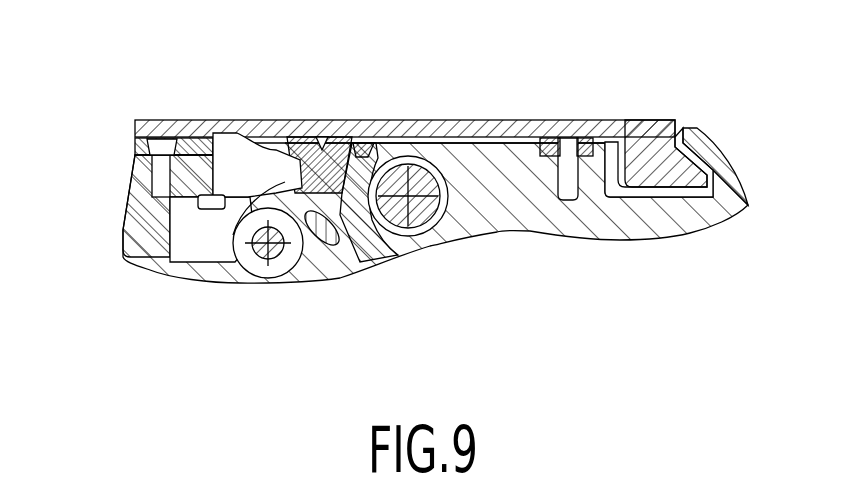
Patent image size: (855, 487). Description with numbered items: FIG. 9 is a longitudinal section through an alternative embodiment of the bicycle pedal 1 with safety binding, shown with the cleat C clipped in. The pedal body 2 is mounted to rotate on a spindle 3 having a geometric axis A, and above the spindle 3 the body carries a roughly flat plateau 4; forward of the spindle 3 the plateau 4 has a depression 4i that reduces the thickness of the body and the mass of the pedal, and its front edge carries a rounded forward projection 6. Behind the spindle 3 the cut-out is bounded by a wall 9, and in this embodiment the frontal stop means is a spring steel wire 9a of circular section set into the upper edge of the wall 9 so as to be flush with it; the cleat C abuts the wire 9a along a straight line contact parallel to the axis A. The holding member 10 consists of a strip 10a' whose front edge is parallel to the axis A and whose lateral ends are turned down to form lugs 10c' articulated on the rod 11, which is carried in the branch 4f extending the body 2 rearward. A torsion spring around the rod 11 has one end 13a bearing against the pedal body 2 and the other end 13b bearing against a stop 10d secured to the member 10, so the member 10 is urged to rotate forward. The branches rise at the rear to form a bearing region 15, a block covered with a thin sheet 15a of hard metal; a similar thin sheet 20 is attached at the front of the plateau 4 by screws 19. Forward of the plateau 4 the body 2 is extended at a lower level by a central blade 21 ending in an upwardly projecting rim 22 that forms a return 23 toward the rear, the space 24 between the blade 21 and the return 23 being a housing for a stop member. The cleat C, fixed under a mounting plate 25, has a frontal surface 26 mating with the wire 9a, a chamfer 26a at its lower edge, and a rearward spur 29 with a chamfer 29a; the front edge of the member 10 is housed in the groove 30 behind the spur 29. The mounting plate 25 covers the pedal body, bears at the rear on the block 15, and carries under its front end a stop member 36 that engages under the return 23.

The bicycle pedal 1 is at (532, 243).
The pedal body 2 is at (497, 203).
The spindle 3 is at (424, 225).
The plateau 4 is at (453, 120).
The branch 4f is at (232, 262).
The depression 4i is at (493, 120).
The rounded forward projection 6 is at (628, 120).
The wall 9 is at (352, 250).
The spring steel wire 9a is at (390, 120).
The holding member 10 is at (243, 140).
The strip 10a' is at (227, 67).
The lugs 10c' is at (146, 301).
The stop 10d is at (198, 203).
The rod 11 is at (258, 275).
The spring end 13a is at (308, 262).
The spring end 13b is at (195, 258).
The bearing region 15 is at (132, 168).
The thin sheet 15a is at (135, 150).
The screws 19 is at (585, 205).
The thin sheet 20 is at (558, 120).
The central blade 21 is at (643, 228).
The rim 22 is at (722, 212).
The return 23 is at (700, 128).
The space 24 is at (698, 200).
The mounting plate 25 is at (515, 120).
The frontal surface 26 is at (365, 120).
The chamfer 26a is at (360, 235).
The spur 29 is at (266, 150).
The chamfer 29a is at (240, 262).
The groove 30 is at (275, 137).
The stop member 36 is at (698, 143).
The geometric axis A is at (428, 120).
The cleat C is at (322, 120).